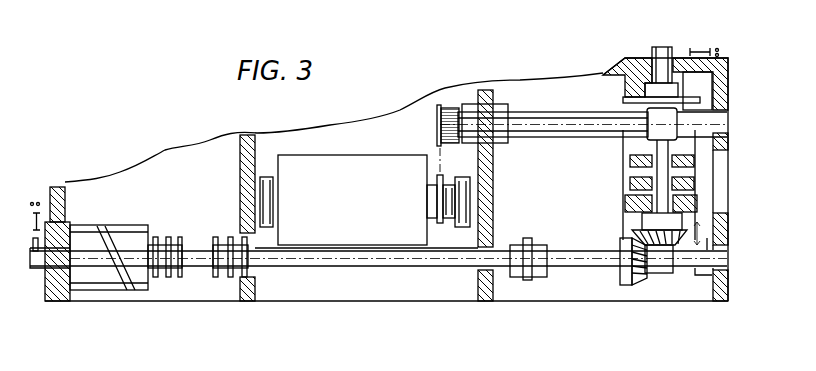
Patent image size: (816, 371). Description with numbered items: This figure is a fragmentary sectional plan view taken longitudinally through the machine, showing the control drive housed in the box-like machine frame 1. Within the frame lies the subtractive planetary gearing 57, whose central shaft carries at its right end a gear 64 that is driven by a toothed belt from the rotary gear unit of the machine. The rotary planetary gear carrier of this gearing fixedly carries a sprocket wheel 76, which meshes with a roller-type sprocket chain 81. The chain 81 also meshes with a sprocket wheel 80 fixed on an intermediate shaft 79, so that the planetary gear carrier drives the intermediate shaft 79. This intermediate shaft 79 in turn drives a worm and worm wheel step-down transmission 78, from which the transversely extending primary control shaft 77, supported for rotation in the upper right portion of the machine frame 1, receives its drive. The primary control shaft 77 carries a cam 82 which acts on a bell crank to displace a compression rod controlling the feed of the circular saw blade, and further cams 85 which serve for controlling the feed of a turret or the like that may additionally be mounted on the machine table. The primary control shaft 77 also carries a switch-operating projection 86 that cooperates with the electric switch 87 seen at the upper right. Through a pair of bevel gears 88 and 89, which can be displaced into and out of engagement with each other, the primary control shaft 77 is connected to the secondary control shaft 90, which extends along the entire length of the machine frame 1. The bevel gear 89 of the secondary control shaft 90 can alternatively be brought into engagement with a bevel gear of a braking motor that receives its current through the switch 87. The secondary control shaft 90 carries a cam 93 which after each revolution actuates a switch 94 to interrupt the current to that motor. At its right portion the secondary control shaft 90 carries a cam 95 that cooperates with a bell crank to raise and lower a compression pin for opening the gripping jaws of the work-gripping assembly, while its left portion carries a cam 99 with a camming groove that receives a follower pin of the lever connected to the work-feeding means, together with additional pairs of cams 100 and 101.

The machine frame 1 is at (58, 196).
The planetary gearing 57 is at (336, 205).
The gear 64 is at (475, 230).
The sprocket wheel 76 is at (447, 222).
The primary control shaft 77 is at (660, 146).
The worm and worm wheel step-down transmission 78 is at (650, 115).
The intermediate shaft 79 is at (553, 126).
The sprocket wheel 80 is at (443, 101).
The sprocket chain 81 is at (437, 157).
The cam 82 is at (637, 100).
The cams 85 is at (637, 185).
The switch-operating projection 86 is at (672, 52).
The electric switch 87 is at (718, 46).
The bevel gear 88 is at (672, 266).
The bevel gear 89 is at (627, 284).
The secondary control shaft 90 is at (348, 258).
The cam 93 is at (37, 268).
The switch 94 is at (35, 192).
The cam 95 is at (530, 282).
The cam 99 is at (100, 283).
The pair of cams 100 is at (165, 276).
The pair of cams 101 is at (227, 273).